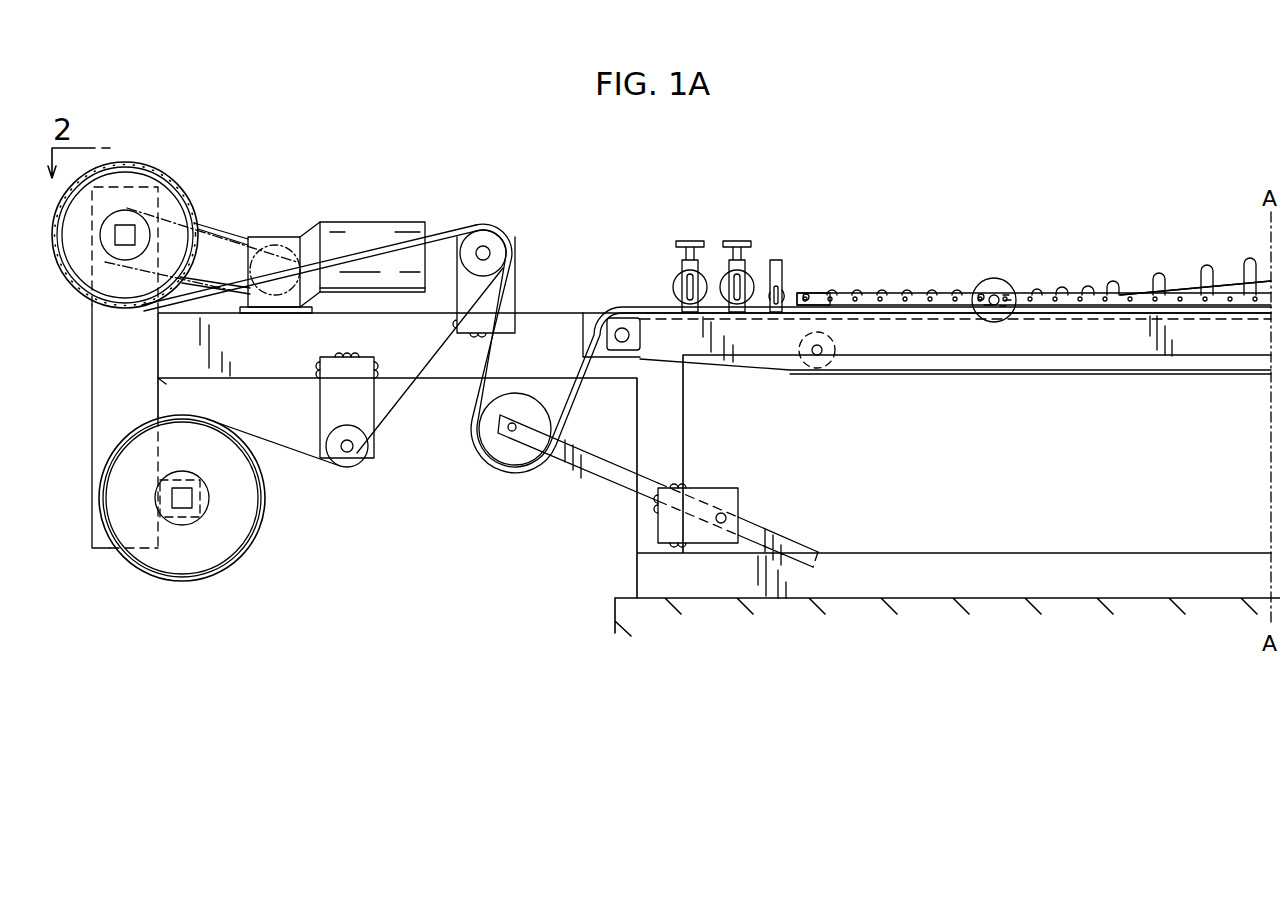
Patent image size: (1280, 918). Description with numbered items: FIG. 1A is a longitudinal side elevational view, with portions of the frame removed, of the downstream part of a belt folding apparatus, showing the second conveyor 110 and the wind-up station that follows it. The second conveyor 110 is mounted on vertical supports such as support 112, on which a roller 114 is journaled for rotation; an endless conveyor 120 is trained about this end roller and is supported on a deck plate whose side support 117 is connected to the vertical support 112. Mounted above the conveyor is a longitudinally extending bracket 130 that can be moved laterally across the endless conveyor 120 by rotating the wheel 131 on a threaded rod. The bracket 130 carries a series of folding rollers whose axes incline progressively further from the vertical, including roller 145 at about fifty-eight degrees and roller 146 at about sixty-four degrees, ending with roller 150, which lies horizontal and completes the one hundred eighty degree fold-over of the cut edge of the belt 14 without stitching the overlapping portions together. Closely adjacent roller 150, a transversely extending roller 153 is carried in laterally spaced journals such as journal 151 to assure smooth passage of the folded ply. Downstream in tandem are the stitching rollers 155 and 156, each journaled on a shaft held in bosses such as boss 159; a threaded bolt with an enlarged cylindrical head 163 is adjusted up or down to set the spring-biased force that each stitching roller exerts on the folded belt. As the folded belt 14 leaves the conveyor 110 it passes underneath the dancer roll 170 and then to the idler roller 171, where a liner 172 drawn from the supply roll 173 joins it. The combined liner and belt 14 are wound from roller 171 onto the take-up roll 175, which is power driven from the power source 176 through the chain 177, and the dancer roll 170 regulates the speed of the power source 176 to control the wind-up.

The belt 14 is at (480, 370).
The second conveyor 110 is at (1060, 219).
The support 112 is at (670, 460).
The roller 114 is at (650, 325).
The side support 117 is at (943, 348).
The endless conveyor 120 is at (1060, 373).
The bracket 130 is at (1034, 257).
The wheel 131 is at (995, 280).
The roller 145 is at (1248, 262).
The roller 146 is at (1201, 268).
The roller 150 is at (818, 290).
The journal 151 is at (778, 262).
The roller 153 is at (792, 290).
The stitching roller 155 is at (756, 277).
The stitching roller 156 is at (672, 275).
The boss 159 is at (737, 312).
The cylindrical head 163 is at (706, 230).
The dancer roll 170 is at (512, 450).
The idler roller 171 is at (492, 237).
The liner 172 is at (410, 405).
The supply roll 173 is at (225, 545).
The take-up roll 175 is at (172, 200).
The power source 176 is at (364, 211).
The chain 177 is at (215, 230).